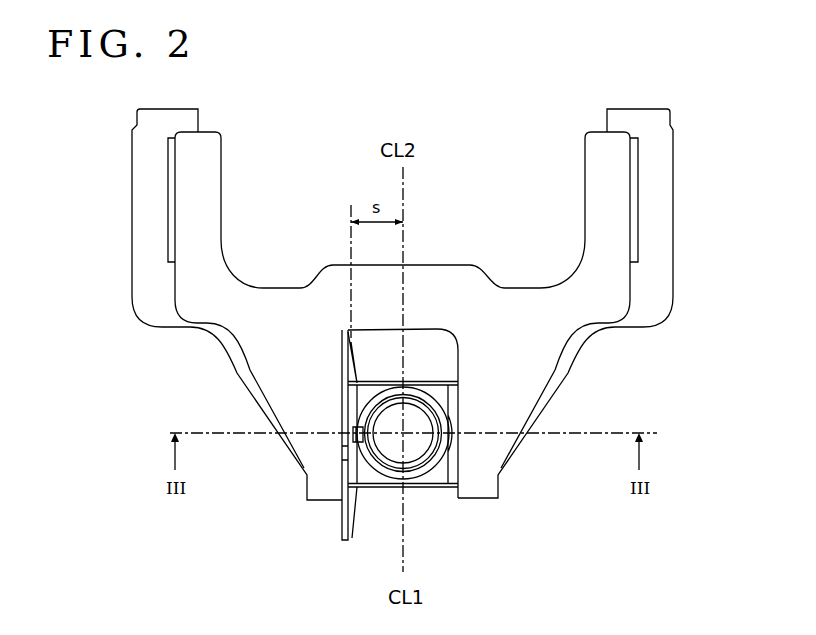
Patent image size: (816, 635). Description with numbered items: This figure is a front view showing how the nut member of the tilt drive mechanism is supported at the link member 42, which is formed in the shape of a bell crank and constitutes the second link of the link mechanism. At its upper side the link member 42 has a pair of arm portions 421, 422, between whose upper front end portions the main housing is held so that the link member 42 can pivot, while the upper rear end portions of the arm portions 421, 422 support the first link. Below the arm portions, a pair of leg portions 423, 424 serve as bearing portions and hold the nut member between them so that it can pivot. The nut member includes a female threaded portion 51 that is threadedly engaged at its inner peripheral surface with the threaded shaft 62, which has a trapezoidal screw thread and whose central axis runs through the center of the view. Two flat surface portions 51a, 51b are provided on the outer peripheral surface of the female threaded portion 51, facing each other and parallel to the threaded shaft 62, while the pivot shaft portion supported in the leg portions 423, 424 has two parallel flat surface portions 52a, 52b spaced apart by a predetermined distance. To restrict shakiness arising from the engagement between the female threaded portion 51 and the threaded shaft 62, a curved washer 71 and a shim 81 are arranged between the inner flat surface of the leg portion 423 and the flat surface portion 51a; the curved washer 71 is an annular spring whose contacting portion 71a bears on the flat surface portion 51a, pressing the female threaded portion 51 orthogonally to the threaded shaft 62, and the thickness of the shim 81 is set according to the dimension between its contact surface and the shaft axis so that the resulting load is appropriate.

The link member 42 is at (597, 117).
The arm portion 421 is at (185, 189).
The arm portion 422 is at (620, 181).
The leg portion 423 is at (287, 382).
The leg portion 424 is at (528, 390).
The female threaded portion 51 is at (381, 477).
The flat surface portion 51a is at (358, 462).
The flat surface portion 51b is at (451, 478).
The flat surface portion 52a is at (437, 380).
The flat surface portion 52b is at (427, 490).
The threaded shaft 62 is at (413, 420).
The curved washer 71 is at (357, 513).
The contacting portion 71a is at (340, 436).
The shim 81 is at (345, 453).